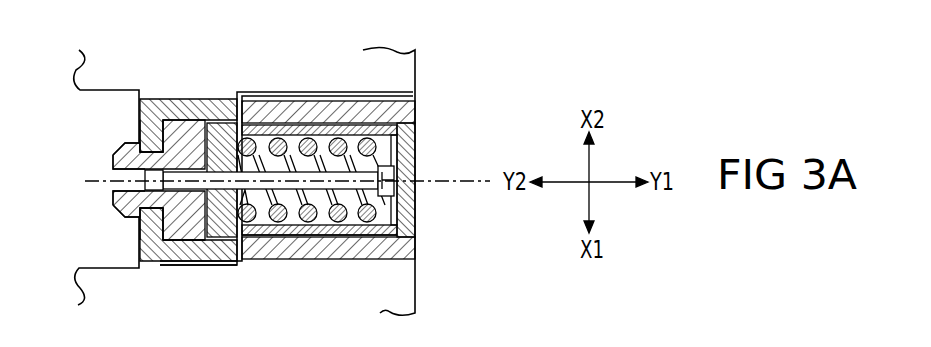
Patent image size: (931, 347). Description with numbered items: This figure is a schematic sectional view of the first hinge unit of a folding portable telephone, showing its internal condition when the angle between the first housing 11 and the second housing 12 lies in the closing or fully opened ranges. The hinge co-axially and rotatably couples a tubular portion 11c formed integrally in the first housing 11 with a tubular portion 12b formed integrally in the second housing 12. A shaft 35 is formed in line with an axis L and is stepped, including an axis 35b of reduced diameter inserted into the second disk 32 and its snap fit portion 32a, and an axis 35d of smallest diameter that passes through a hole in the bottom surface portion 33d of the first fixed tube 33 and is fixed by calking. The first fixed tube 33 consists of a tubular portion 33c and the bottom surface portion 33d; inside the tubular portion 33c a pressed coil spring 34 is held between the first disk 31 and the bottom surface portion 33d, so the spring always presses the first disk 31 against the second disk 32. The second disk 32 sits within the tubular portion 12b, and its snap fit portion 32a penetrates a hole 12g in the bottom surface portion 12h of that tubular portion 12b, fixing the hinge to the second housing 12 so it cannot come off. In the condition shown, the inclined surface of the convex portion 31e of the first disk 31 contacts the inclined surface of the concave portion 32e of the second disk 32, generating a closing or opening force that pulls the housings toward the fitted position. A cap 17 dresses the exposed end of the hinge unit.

The first housing 11 is at (74, 298).
The tubular portion 11c is at (415, 111).
The second housing 12 is at (76, 58).
The tubular portion 12b is at (155, 117).
The bottom surface portion 12h is at (147, 130).
The hole 12g is at (143, 217).
The cap 17 is at (415, 150).
The first disk 31 is at (233, 122).
The convex portion 31e is at (240, 266).
The second disk 32 is at (175, 243).
The snap fit portion 32a is at (116, 202).
The concave portion 32e is at (200, 262).
The first fixed tube 33 is at (365, 125).
The tubular portion 33c is at (360, 237).
The bottom surface portion 33d is at (391, 203).
The pressed coil spring 34 is at (335, 222).
The shaft 35 is at (390, 167).
The axis 35b is at (145, 174).
The axis 35d is at (388, 190).
The axis L is at (83, 182).